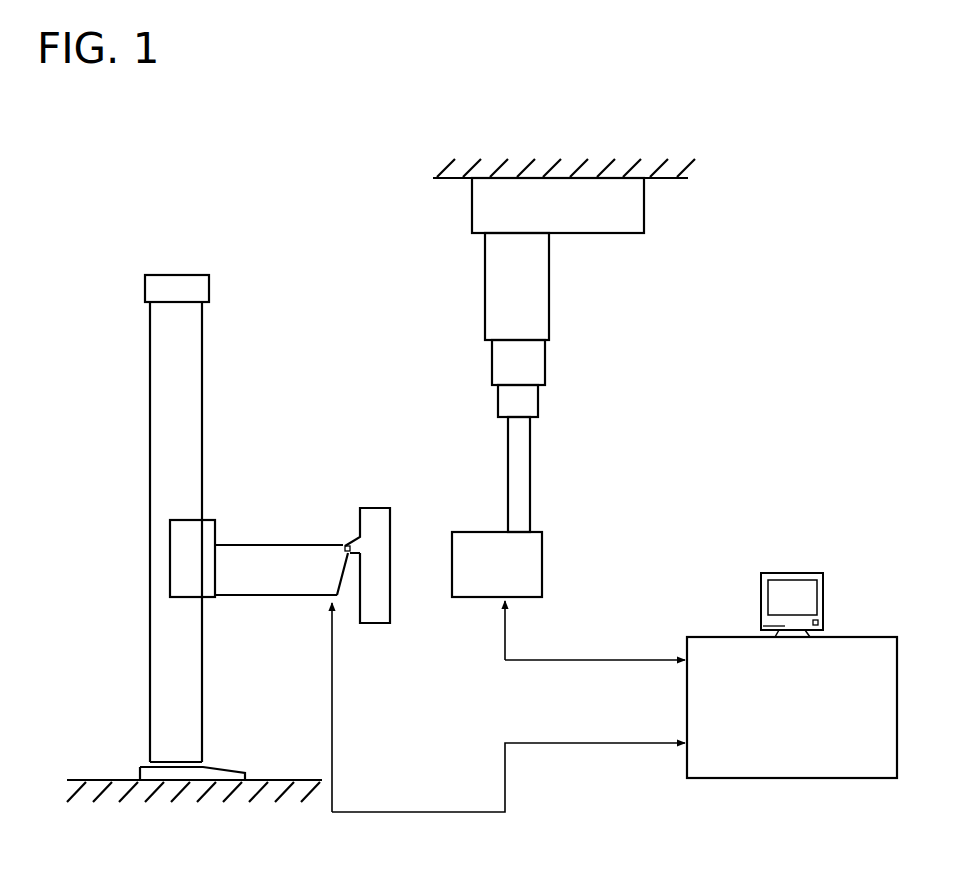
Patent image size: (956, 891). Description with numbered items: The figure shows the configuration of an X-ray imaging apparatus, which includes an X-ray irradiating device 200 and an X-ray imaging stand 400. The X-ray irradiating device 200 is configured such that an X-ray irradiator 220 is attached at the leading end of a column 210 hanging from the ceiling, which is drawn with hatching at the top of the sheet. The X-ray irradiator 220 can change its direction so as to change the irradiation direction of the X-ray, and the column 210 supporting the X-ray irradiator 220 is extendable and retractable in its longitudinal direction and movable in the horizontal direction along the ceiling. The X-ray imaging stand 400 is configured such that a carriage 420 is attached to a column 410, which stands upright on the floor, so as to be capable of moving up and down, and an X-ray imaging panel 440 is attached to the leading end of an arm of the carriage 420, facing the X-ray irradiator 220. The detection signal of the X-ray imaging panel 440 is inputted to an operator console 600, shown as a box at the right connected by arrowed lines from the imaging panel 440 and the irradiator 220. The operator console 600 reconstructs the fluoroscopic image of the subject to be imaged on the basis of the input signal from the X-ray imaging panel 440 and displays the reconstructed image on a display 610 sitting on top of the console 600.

The X-ray irradiating device 200 is at (588, 387).
The column 210 is at (540, 295).
The X-ray irradiator 220 is at (545, 540).
The X-ray imaging stand 400 is at (227, 527).
The column 410 is at (152, 450).
The carriage 420 is at (205, 527).
The X-ray imaging panel 440 is at (372, 508).
The operator console 600 is at (793, 656).
The display 610 is at (788, 592).